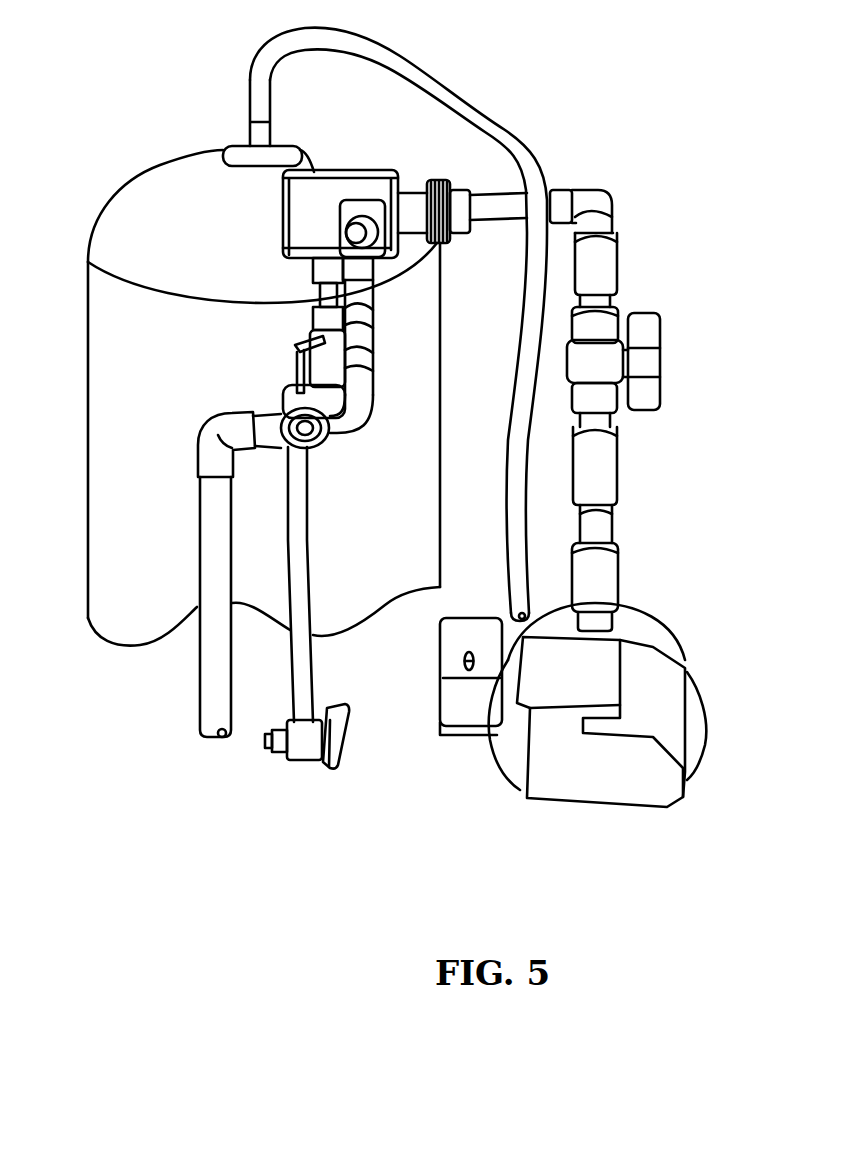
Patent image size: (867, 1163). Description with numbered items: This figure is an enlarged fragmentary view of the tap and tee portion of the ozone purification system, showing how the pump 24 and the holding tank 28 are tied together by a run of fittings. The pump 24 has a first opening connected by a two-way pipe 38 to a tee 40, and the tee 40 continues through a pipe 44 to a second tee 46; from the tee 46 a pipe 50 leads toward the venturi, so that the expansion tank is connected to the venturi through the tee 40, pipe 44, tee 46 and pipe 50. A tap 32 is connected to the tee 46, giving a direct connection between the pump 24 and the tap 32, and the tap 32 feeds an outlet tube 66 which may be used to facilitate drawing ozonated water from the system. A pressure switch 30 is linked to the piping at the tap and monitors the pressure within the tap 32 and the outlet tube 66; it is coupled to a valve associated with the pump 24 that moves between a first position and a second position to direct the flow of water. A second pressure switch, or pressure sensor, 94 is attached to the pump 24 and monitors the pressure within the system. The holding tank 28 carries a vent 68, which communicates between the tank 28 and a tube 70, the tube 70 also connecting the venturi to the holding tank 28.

The pump 24 is at (660, 637).
The holding tank 28 is at (152, 218).
The pressure switch 30 is at (350, 190).
The tap 32 is at (327, 433).
The two-way pipe 38 is at (597, 520).
The tee 40 is at (608, 462).
The pipe 44 is at (597, 303).
The tee 46 is at (364, 352).
The pipe 50 is at (213, 658).
The outlet tube 66 is at (303, 670).
The vent 68 is at (266, 137).
The tube 70 is at (418, 88).
The pressure switch 94 is at (463, 633).